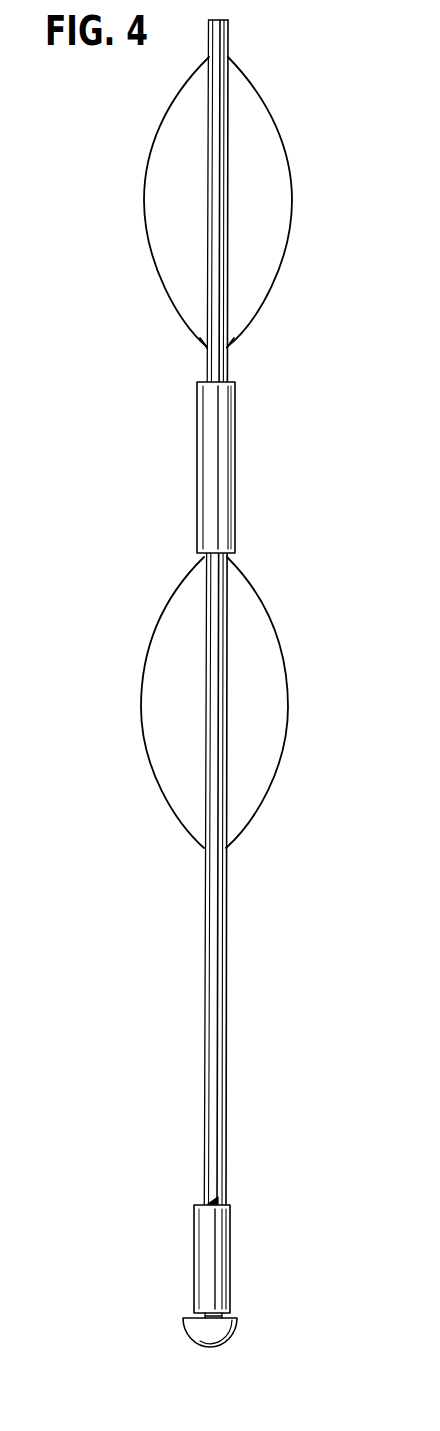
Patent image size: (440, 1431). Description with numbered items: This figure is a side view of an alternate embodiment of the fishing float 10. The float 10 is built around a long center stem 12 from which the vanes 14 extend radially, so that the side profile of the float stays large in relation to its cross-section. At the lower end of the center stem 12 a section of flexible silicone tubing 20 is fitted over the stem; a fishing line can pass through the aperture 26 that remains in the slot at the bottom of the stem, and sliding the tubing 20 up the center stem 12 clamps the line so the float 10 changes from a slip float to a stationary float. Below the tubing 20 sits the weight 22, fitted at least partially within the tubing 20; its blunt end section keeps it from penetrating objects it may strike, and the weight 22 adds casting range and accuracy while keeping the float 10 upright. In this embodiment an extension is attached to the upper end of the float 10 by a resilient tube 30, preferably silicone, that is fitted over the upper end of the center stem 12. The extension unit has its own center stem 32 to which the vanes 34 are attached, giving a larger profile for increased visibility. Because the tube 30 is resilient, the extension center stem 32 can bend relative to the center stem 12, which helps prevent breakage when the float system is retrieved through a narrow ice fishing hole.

The float 10 is at (302, 566).
The center stem 12 is at (224, 933).
The vanes 14 is at (275, 677).
The silicone tubing 20 is at (222, 1254).
The weight 22 is at (235, 1334).
The aperture 26 is at (214, 1200).
The resilient tube 30 is at (226, 455).
The center stem of extension 32 is at (228, 361).
The vanes of extension 34 is at (268, 157).